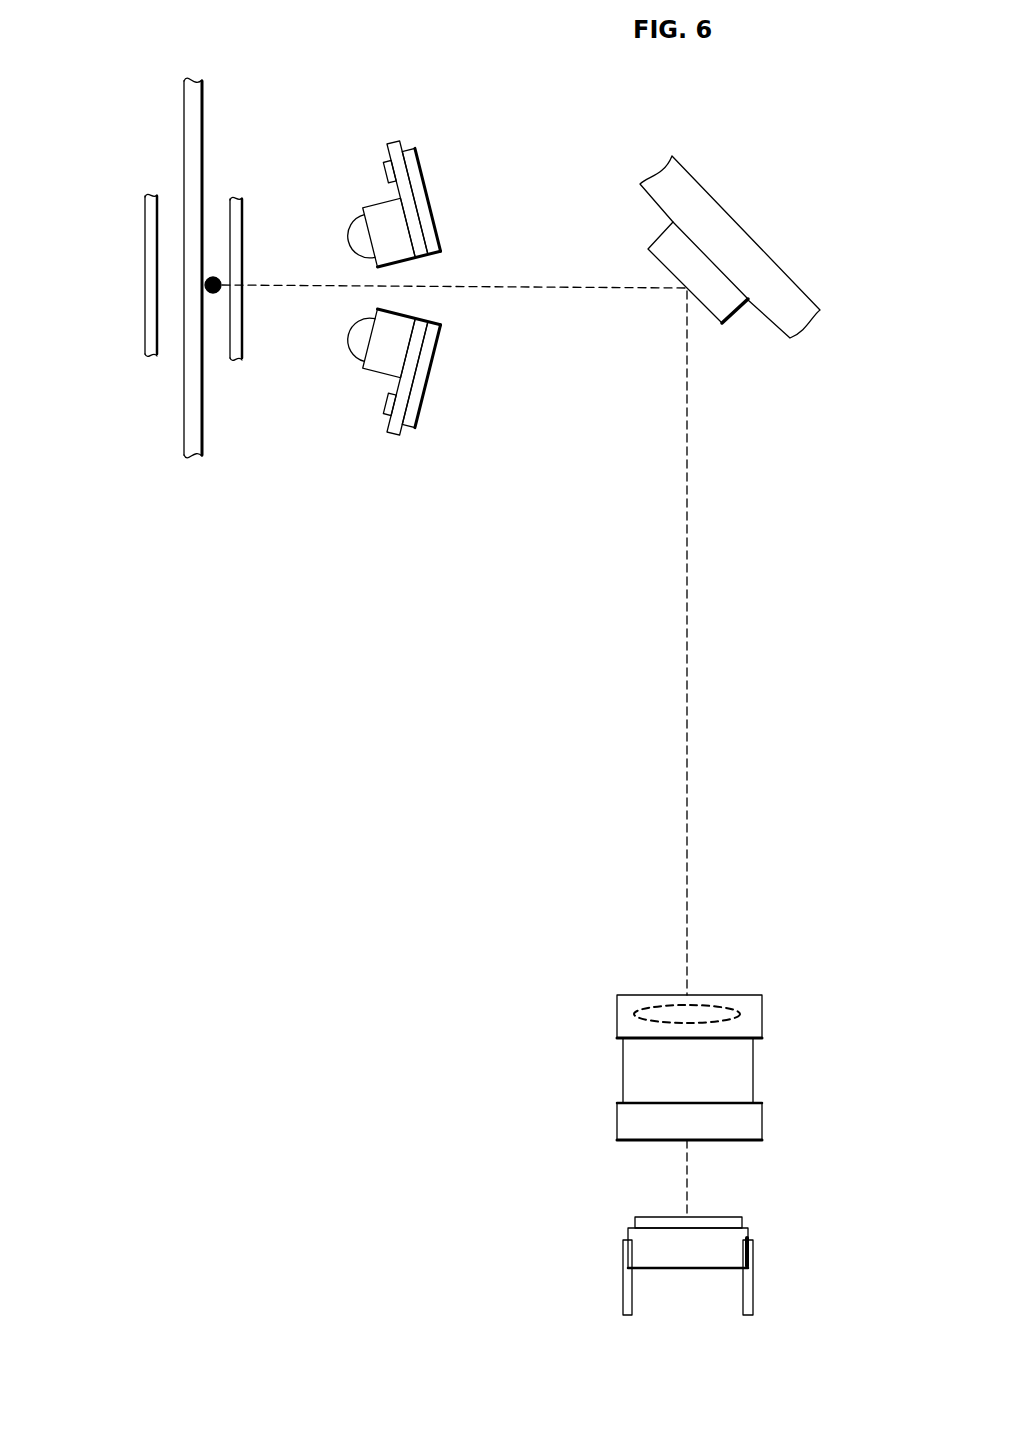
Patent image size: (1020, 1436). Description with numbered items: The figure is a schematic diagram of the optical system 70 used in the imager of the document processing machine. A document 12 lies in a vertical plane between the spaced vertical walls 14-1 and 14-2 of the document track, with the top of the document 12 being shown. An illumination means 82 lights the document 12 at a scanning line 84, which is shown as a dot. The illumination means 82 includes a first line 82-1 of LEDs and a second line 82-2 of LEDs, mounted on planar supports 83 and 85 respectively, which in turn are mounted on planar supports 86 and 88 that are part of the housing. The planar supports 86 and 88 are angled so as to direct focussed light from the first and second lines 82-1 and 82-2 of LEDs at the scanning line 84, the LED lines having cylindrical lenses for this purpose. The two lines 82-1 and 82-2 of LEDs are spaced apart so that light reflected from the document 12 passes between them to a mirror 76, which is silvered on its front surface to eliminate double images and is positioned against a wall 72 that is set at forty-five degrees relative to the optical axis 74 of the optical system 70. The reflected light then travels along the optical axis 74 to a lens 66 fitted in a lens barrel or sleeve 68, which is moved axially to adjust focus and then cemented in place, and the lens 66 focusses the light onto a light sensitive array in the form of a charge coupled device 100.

The document 12 is at (205, 98).
The vertical wall 14-1 is at (237, 337).
The vertical wall 14-2 is at (150, 217).
The lens 66 is at (723, 1007).
The lens barrel or sleeve 68 is at (721, 1048).
The optical system 70 is at (525, 702).
The wall 72 is at (730, 270).
The optical axis 74 is at (690, 620).
The mirror 76 is at (718, 308).
The illumination means 82 is at (424, 290).
The first array or line of LEDs 82-1 is at (410, 181).
The second array or line of LEDs 82-2 is at (399, 397).
The planar support 83 is at (395, 140).
The scanning line 84 is at (216, 276).
The planar support 85 is at (397, 433).
The planar support 86 is at (430, 233).
The planar support 88 is at (425, 370).
The charge coupled device (CCD) 100 is at (738, 1217).